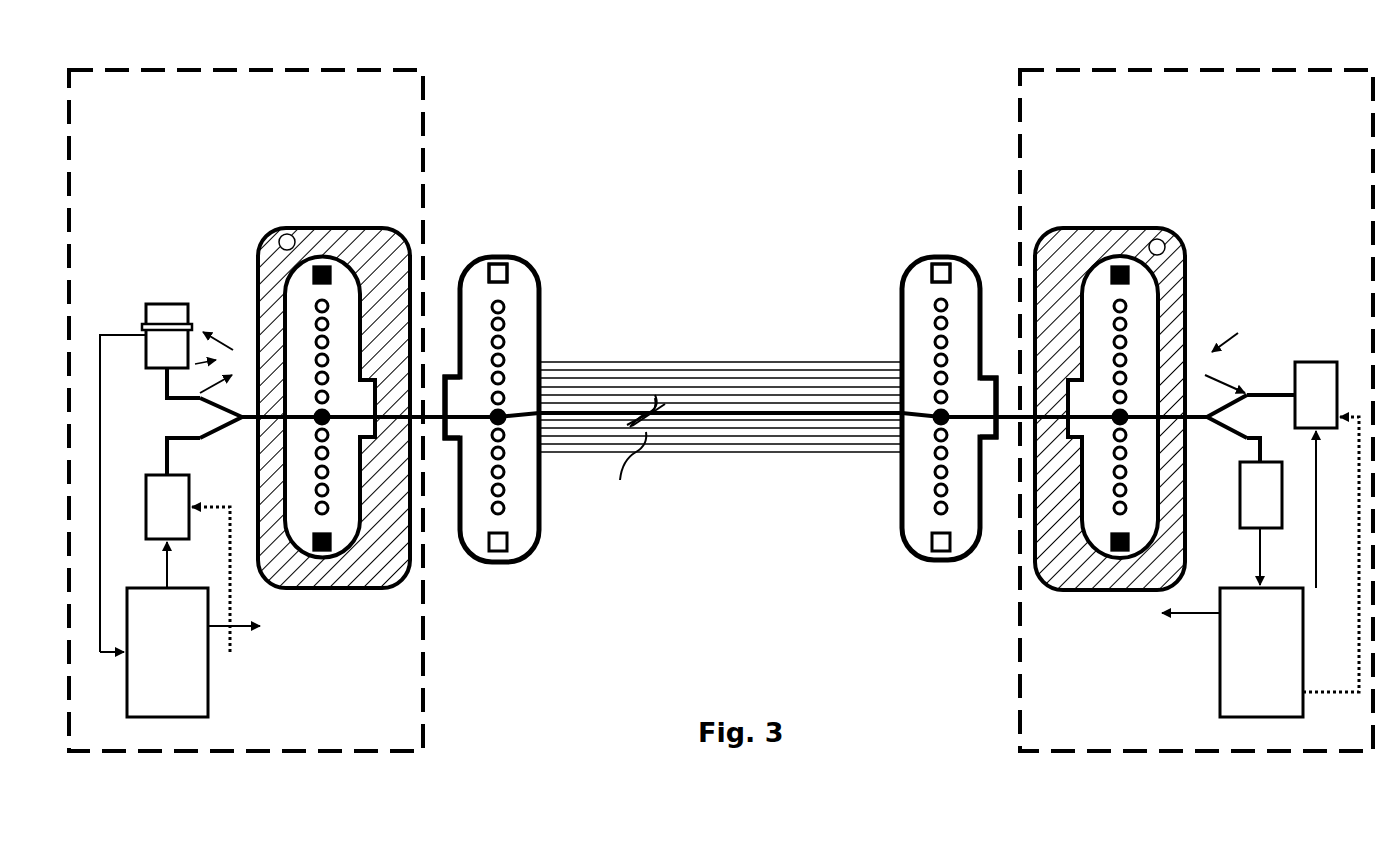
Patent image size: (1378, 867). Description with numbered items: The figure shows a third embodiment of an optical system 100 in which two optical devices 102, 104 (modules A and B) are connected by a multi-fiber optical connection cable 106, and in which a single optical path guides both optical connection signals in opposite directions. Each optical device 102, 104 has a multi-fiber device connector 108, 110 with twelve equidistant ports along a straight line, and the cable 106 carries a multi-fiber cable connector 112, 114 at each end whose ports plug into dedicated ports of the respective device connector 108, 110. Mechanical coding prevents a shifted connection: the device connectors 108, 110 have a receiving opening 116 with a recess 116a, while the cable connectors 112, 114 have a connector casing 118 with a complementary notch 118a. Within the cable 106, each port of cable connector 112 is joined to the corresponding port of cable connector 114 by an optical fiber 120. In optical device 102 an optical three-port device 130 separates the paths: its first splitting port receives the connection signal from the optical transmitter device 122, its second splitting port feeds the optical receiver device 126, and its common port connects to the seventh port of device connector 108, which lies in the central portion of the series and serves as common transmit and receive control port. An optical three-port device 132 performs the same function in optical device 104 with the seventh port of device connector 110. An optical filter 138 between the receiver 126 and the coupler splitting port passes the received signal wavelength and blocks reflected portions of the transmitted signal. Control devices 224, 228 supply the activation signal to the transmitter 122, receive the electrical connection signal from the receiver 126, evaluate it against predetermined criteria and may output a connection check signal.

The optical system 100 is at (746, 123).
The optical device 102 is at (250, 68).
The optical device 104 is at (1178, 68).
The multi-fiber optical connection cable 106 is at (682, 344).
The multi-fiber device connector 108 is at (321, 224).
The multi-fiber device connector 110 is at (1115, 224).
The multi-fiber cable connector 112 is at (543, 268).
The multi-fiber cable connector 114 is at (904, 270).
The receiving opening 116 is at (262, 252).
The recess 116a is at (368, 395).
The connector casing 118 is at (503, 256).
The notch 118a is at (447, 442).
The optical fiber 120 is at (630, 437).
The optical transmitter device 122 is at (152, 438).
The optical receiver device 126 is at (167, 264).
The optical 3-port device 130 is at (168, 343).
The optical 3-port device 132 is at (1224, 366).
The optical filter 138 is at (142, 329).
The control device 224 is at (208, 652).
The control device 228 is at (1238, 642).